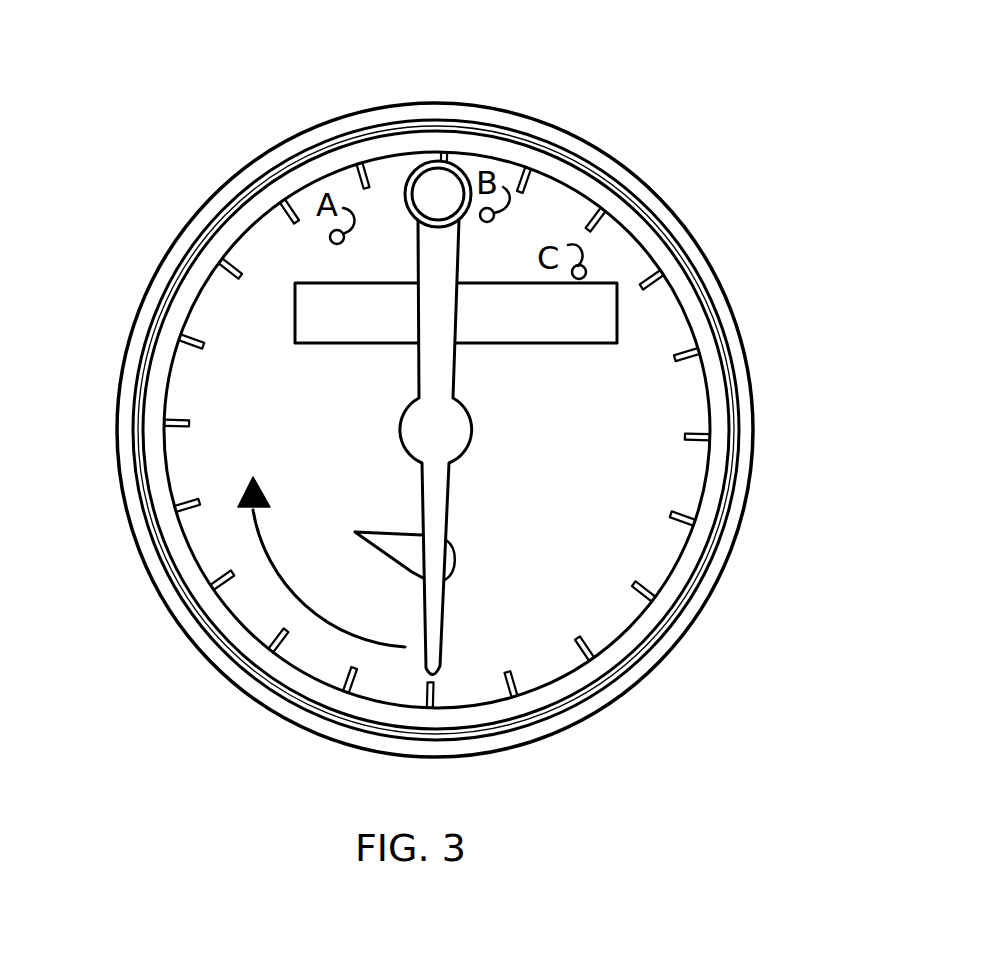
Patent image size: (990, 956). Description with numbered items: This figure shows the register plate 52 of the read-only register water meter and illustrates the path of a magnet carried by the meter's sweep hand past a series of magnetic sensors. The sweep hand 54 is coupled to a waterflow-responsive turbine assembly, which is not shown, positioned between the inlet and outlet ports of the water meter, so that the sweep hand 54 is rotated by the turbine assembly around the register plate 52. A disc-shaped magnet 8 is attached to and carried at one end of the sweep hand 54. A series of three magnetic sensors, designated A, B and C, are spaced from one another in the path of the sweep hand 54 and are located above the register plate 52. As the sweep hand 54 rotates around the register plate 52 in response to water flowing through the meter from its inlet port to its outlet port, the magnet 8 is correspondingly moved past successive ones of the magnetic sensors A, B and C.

The magnet 8 is at (405, 192).
The register plate 52 is at (728, 567).
The sweep hand 54 is at (447, 508).